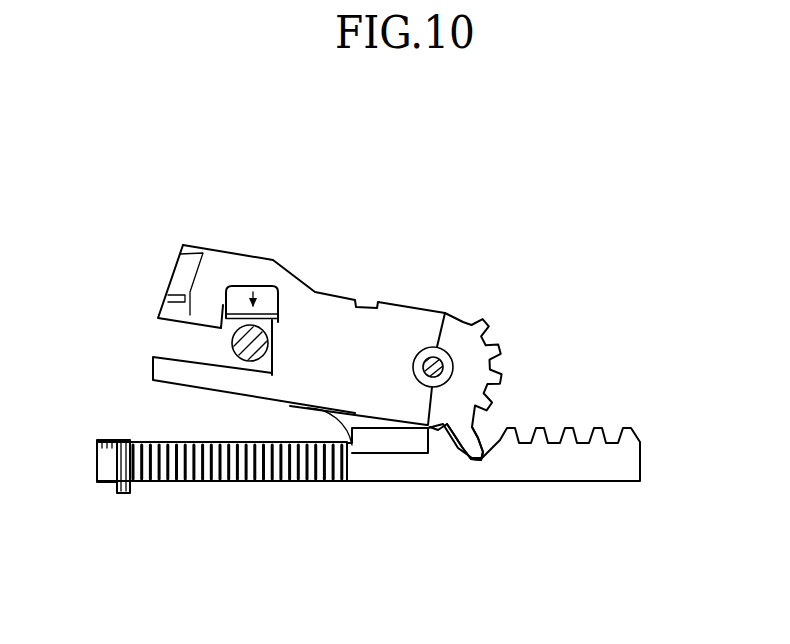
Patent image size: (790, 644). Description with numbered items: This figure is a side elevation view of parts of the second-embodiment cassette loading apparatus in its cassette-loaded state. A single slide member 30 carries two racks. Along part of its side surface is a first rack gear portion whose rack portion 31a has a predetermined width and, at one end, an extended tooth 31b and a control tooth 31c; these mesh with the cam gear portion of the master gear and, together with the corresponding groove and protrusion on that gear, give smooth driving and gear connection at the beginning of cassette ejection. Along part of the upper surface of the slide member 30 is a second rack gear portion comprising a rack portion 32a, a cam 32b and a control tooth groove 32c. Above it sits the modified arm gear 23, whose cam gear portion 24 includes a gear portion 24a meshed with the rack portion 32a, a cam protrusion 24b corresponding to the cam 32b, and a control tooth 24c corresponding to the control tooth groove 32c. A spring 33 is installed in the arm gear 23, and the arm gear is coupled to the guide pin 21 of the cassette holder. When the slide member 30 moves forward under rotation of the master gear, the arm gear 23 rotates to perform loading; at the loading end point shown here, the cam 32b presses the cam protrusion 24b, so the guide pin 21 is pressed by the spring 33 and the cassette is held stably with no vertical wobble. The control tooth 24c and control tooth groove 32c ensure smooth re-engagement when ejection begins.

The guide pin 21 is at (250, 355).
The arm gear 23 is at (327, 276).
The cam gear portion 24 is at (468, 308).
The gear portion 24a is at (503, 355).
The cam protrusion 24b is at (482, 430).
The control tooth 24c is at (423, 440).
The slide member 30 is at (337, 486).
The rack portion 31a is at (205, 468).
The extended tooth 31b is at (120, 493).
The control tooth 31c is at (100, 440).
The rack portion 32a is at (600, 430).
The cam 32b is at (478, 460).
The control tooth groove 32c is at (395, 447).
The spring 33 is at (240, 285).